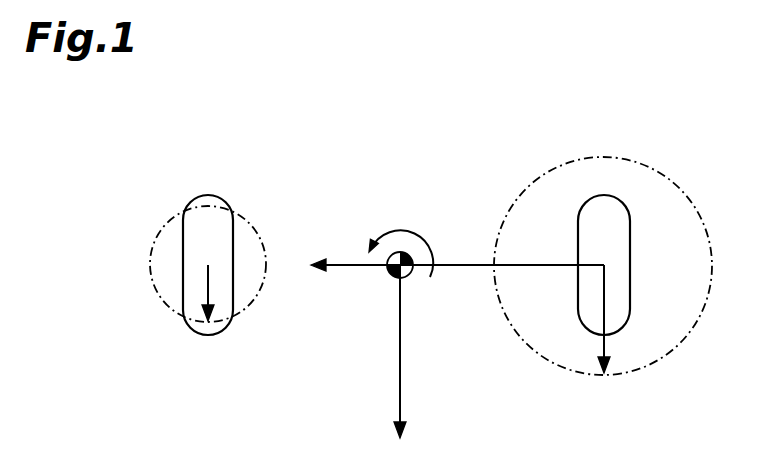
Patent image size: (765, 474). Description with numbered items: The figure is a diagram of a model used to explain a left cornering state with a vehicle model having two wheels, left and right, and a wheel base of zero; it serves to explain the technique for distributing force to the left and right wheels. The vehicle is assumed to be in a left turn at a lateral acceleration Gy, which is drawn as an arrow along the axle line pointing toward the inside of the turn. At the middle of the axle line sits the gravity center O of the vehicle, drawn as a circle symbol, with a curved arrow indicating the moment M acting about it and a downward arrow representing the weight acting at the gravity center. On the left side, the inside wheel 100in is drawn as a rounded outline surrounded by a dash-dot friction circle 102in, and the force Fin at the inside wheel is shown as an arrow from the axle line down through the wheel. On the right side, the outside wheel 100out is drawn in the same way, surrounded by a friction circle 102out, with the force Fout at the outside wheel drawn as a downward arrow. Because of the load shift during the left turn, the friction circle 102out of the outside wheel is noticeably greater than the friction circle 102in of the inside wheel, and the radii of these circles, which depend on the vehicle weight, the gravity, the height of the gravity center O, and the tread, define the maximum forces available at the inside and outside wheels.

The inside wheel 100in is at (208, 195).
The friction circle of the inside wheel 102in is at (168, 223).
The inside wheel force Fin is at (208, 287).
The lateral acceleration Gy is at (339, 268).
The moment M is at (389, 233).
The gravity center of the vehicle O is at (410, 274).
The outside wheel 100out is at (600, 195).
The outside wheel force Fout is at (604, 312).
The friction circle of the outside wheel 102out is at (662, 357).